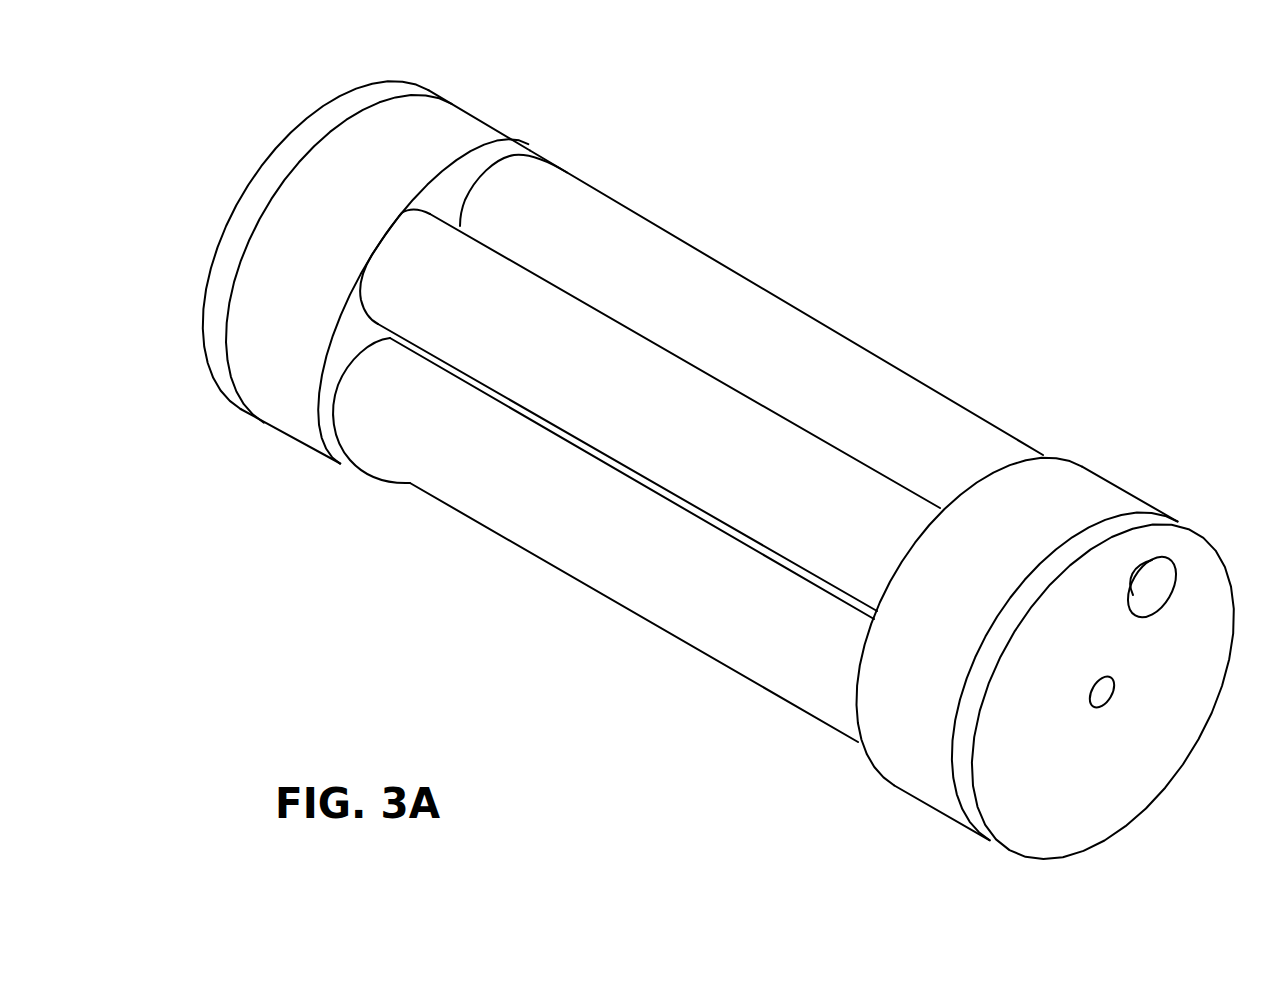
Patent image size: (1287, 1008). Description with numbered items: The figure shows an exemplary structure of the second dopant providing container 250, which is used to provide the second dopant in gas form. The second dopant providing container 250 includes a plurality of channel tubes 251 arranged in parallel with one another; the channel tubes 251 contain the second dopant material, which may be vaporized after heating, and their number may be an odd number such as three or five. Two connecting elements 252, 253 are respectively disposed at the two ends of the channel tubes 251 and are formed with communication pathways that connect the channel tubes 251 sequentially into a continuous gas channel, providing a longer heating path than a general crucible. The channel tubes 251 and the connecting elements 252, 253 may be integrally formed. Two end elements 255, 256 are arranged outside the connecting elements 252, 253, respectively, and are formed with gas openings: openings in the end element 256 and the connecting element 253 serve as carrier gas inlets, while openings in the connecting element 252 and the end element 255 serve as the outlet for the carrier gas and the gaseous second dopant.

The second dopant providing container 250 is at (1042, 141).
The channel tubes 251 is at (735, 298).
The connecting element 252 is at (1084, 488).
The connecting element 253 is at (485, 129).
The end element 255 is at (1130, 802).
The end element 256 is at (266, 176).